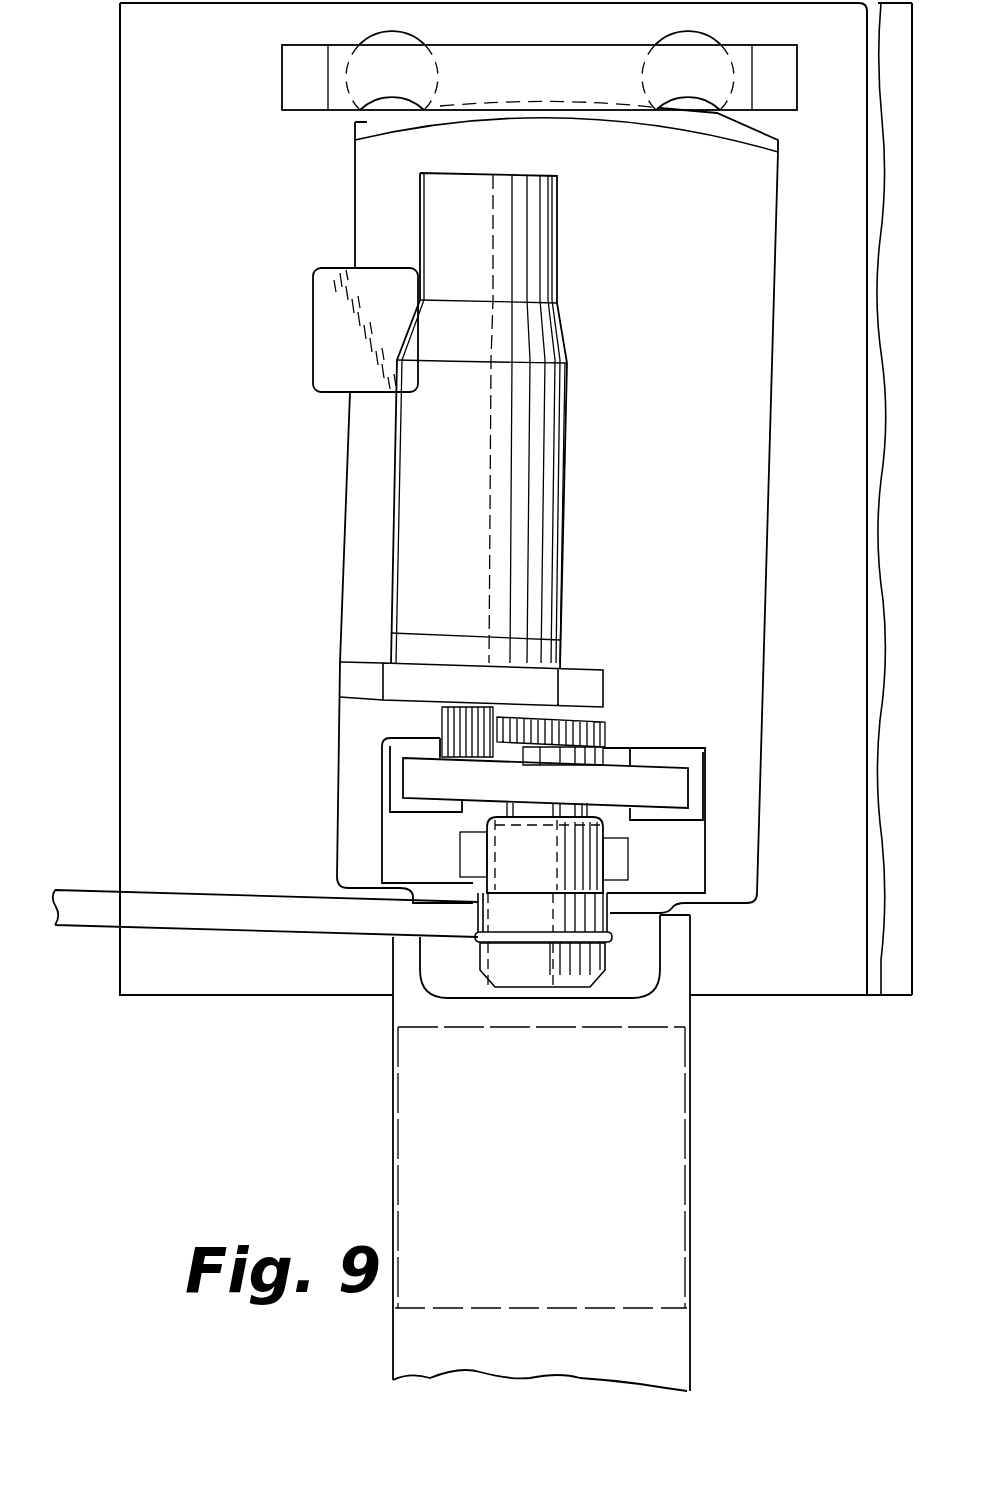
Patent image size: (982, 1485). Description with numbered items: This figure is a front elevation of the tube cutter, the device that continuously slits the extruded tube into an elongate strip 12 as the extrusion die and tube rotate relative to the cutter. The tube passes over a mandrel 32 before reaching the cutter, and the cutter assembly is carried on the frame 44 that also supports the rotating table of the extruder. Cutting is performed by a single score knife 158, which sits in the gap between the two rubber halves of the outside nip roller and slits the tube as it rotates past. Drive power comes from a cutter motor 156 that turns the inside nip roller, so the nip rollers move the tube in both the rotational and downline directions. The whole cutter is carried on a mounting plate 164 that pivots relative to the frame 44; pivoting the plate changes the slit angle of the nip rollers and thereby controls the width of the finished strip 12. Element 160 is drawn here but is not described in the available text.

The elongate strip 12 is at (202, 905).
The mandrel 32 is at (660, 1308).
The frame 44 is at (133, 244).
The cutter motor 156 is at (525, 470).
The score knife 158 is at (503, 957).
The mounting bracket 160 is at (670, 1110).
The mounting plate 164 is at (370, 183).